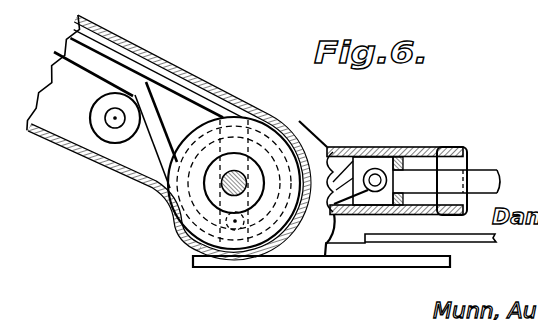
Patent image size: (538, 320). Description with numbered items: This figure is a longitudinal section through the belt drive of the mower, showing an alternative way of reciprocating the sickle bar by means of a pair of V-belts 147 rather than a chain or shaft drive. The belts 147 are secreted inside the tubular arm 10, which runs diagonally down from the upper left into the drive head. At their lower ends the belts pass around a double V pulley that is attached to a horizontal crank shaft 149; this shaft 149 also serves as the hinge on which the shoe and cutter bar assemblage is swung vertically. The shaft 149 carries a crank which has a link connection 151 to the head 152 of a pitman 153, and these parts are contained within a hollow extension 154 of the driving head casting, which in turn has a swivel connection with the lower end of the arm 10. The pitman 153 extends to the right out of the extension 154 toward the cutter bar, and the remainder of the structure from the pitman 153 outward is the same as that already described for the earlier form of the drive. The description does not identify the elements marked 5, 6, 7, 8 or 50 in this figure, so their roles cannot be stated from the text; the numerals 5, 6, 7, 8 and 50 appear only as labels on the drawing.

The housing arm 5 is at (97, 27).
The cable sheath band 6 is at (246, 106).
The base plate 7 is at (302, 262).
The upper plate 8 is at (472, 247).
The tubular arm 10 is at (133, 46).
The V-belts 147 is at (162, 84).
The horizontal crank shaft 149 is at (241, 175).
The pivot hole 50 is at (196, 256).
The link connection 151 is at (340, 185).
The head 152 is at (368, 170).
The pitman 153 is at (444, 178).
The hollow extension 154 is at (397, 148).